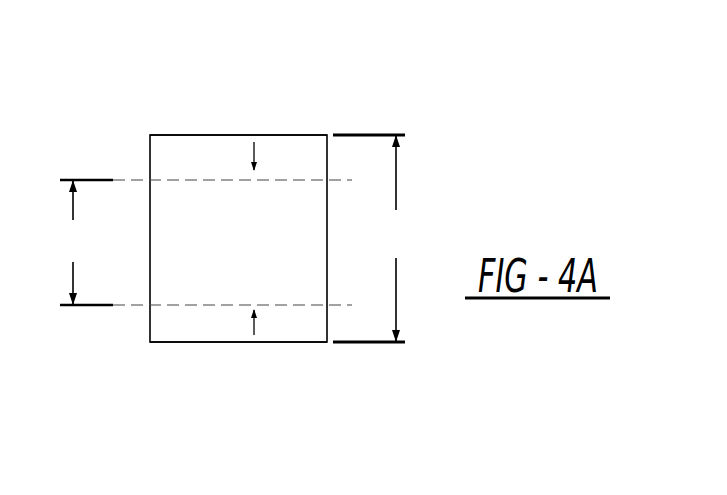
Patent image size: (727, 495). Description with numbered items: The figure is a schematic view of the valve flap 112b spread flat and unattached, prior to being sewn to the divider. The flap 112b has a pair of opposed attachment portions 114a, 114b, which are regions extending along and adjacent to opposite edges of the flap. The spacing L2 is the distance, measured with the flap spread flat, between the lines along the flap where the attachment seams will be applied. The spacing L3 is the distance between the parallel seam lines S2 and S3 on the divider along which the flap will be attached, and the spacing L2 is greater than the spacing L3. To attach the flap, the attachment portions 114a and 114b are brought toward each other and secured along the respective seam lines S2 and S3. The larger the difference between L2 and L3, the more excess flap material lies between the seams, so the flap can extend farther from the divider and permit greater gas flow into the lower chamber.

The flap 112b is at (222, 150).
The attachment portion 114a is at (287, 135).
The attachment portion 114b is at (242, 342).
The seam line S2 is at (197, 180).
The seam line S3 is at (198, 305).
The spacing L2 is at (372, 238).
The spacing L3 is at (86, 242).